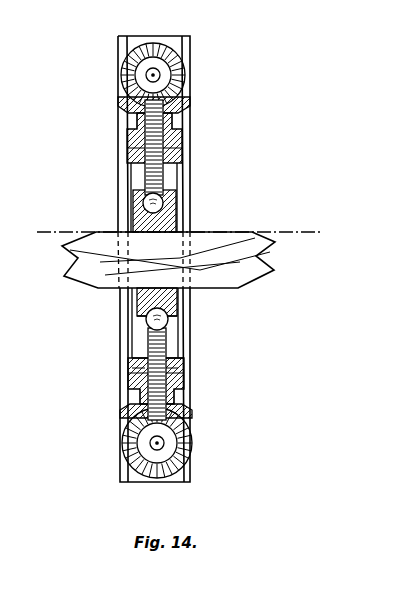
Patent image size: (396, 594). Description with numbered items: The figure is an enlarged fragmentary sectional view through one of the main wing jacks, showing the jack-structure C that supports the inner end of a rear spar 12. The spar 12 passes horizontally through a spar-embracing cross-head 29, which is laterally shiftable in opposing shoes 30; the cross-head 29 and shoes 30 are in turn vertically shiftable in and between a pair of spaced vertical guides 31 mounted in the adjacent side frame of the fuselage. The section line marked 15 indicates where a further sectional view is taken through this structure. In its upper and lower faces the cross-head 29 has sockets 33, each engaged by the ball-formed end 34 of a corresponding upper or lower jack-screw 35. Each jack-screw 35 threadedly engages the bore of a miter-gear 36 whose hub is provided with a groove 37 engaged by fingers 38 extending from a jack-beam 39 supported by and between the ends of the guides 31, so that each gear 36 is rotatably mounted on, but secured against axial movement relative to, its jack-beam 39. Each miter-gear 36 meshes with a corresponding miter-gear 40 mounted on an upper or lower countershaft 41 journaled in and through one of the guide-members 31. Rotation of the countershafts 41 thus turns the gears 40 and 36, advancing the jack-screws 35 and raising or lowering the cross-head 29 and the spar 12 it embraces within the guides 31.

The rear spar 12 is at (241, 284).
The section line 15 is at (58, 227).
The cross-head 29 is at (176, 215).
The shoes 30 is at (183, 322).
The vertical guides 31 is at (186, 362).
The sockets 33 is at (178, 196).
The ball-formed ends 34 is at (146, 203).
The jack-screws 35 is at (145, 182).
The miter-gear 36 is at (190, 109).
The groove 37 is at (172, 127).
The fingers 38 is at (128, 138).
The jack-beam 39 is at (128, 158).
The miter-gears 40 is at (187, 80).
The countershafts 41 is at (154, 72).
The jack-structure C is at (130, 368).